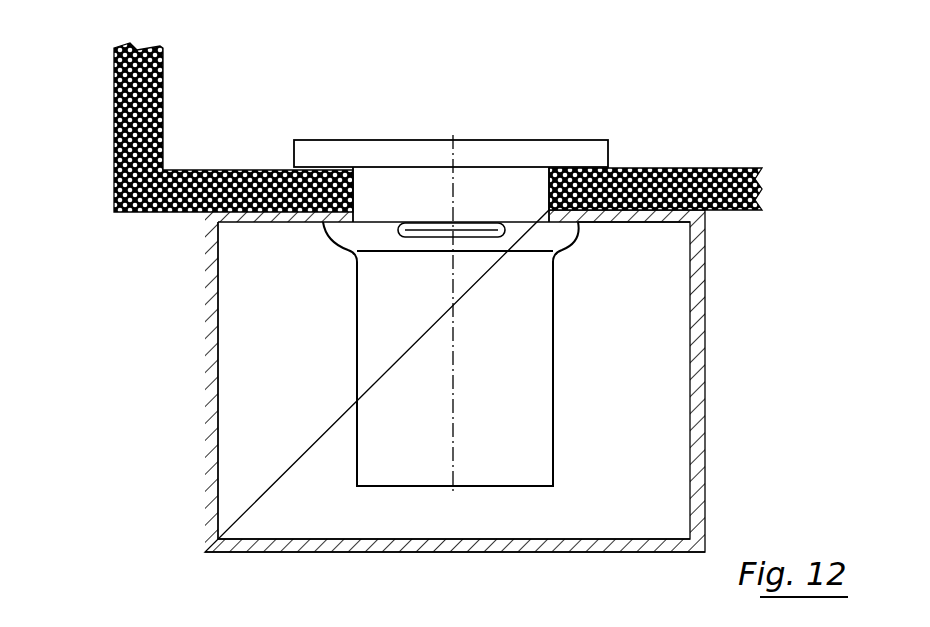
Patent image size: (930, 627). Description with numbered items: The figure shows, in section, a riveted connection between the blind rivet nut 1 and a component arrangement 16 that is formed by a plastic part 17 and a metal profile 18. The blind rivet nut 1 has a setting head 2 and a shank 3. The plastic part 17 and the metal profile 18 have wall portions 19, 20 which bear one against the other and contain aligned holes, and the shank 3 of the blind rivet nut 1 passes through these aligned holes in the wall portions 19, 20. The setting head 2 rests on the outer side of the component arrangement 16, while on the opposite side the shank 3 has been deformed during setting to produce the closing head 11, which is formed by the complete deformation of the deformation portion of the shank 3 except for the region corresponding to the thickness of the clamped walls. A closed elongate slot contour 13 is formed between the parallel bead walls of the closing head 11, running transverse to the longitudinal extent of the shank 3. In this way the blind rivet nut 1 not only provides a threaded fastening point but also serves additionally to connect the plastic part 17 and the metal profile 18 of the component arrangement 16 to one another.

The blind rivet nut 1 is at (281, 395).
The setting head 2 is at (551, 146).
The shank 3 is at (555, 393).
The closing head 11 is at (342, 238).
The slot contour 13 is at (418, 238).
The component arrangement 16 is at (163, 257).
The plastic part 17 is at (92, 176).
The metal profile 18 is at (176, 527).
The wall portion 19 is at (675, 152).
The wall portion 20 is at (647, 222).